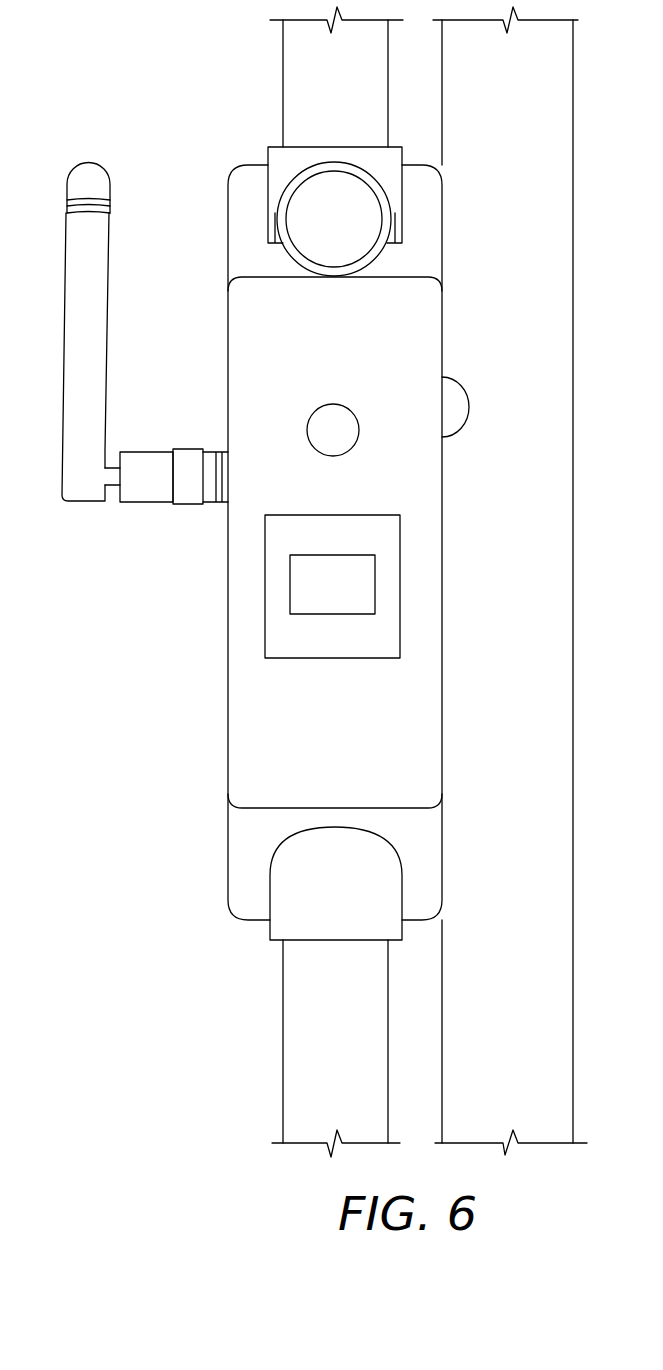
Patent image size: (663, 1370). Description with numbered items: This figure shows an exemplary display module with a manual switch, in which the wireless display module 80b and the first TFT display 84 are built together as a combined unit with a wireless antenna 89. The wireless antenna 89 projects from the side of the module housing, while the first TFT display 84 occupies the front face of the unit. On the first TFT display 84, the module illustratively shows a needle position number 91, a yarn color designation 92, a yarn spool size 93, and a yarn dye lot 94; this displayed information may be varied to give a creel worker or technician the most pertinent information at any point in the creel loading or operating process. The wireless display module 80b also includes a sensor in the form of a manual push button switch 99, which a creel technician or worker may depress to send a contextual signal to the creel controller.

The wireless display module 80b is at (442, 322).
The first TFT display 84 is at (333, 587).
The wireless antenna 89 is at (110, 178).
The needle position number 91 is at (275, 530).
The yarn color designation 92 is at (290, 595).
The yarn spool size 93 is at (355, 627).
The yarn dye lot 94 is at (275, 648).
The manual push button switch 99 is at (470, 405).